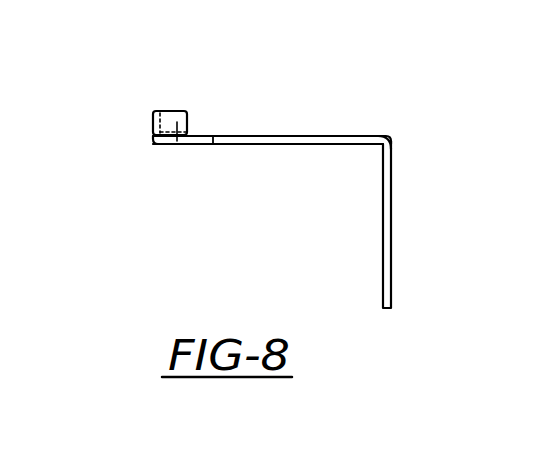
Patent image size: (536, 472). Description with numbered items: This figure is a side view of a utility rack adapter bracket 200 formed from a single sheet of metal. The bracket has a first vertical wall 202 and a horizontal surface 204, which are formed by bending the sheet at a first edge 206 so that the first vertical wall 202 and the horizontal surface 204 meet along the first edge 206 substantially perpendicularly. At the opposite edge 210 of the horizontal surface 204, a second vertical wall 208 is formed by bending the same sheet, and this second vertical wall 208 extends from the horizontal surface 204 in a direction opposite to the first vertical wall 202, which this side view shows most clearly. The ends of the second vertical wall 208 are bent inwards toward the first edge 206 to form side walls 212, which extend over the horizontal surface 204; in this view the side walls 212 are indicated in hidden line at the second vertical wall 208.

The bracket 200 is at (276, 207).
The first vertical wall 202 is at (392, 247).
The horizontal surface 204 is at (315, 145).
The first edge 206 is at (392, 138).
The second vertical wall 208 is at (153, 127).
The opposite edge 210 is at (152, 138).
The side walls 212 is at (180, 117).